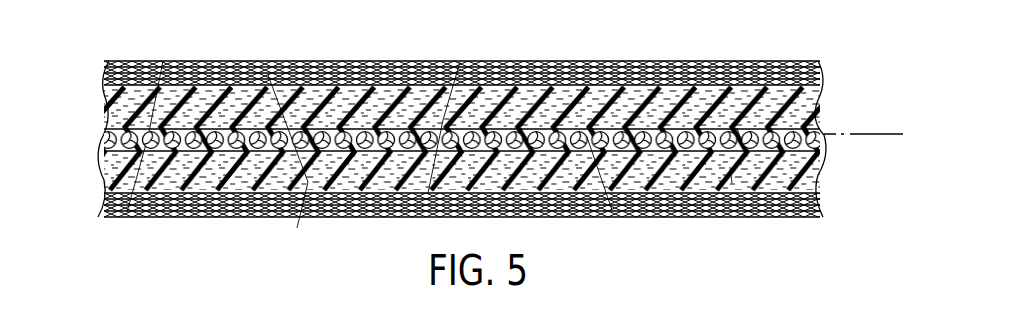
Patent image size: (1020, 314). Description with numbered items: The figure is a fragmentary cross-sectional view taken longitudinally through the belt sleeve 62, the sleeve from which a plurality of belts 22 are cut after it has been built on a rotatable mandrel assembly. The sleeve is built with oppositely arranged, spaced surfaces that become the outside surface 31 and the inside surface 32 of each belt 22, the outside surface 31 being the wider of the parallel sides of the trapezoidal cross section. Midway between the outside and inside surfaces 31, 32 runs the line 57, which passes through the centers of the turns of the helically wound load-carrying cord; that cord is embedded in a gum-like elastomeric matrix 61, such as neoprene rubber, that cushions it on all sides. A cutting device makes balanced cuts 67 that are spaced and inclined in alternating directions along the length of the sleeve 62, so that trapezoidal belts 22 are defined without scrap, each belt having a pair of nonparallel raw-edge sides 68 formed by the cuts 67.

The belt 22 is at (409, 61).
The outside surface 31 is at (653, 60).
The inside surface 32 is at (626, 0).
The line 57 is at (868, 134).
The elastomeric matrix 61 is at (714, 11).
The belt sleeve 62 is at (253, 61).
The cuts 67 is at (288, 105).
The raw-edge sides 68 is at (468, 228).